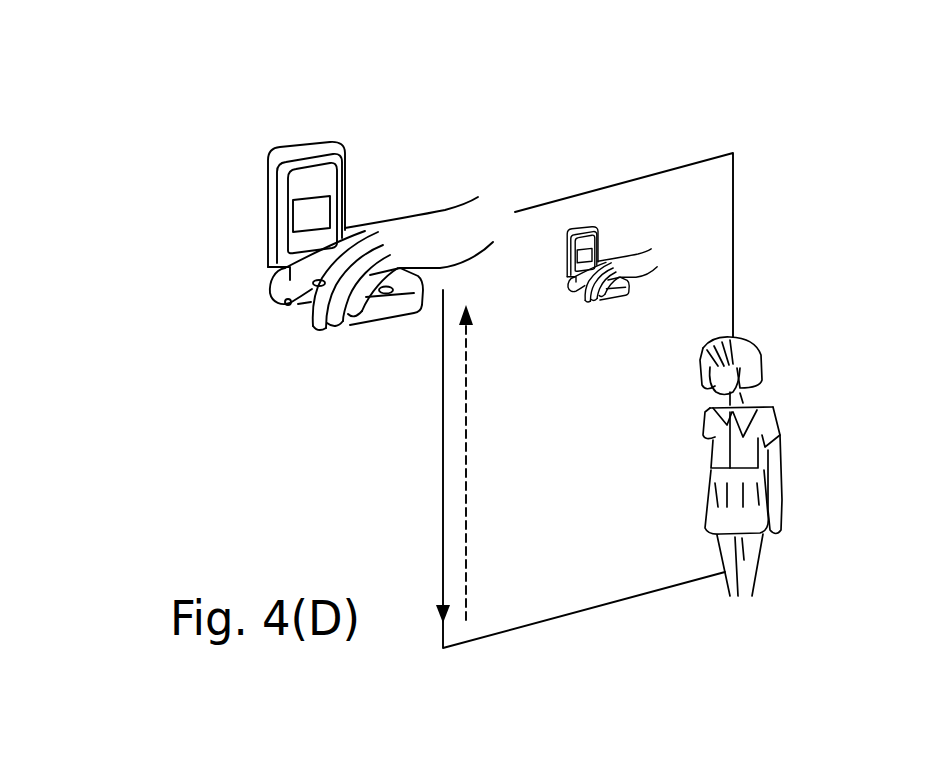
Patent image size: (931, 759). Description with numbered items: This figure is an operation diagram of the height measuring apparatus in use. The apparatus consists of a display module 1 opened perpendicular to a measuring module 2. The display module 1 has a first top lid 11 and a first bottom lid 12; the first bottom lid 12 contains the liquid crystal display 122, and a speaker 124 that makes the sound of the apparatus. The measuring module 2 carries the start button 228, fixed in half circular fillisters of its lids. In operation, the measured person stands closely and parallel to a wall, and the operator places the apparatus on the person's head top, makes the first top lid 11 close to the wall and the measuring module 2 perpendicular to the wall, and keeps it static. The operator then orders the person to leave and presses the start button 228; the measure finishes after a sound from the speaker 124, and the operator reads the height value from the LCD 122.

The display module 1 is at (282, 227).
The first bottom lid 12 is at (282, 173).
The speaker 124 is at (320, 175).
The liquid crystal display (LCD) 122 is at (318, 208).
The first top lid 11 is at (272, 242).
The start button 228 is at (283, 306).
The measuring module 2 is at (385, 331).